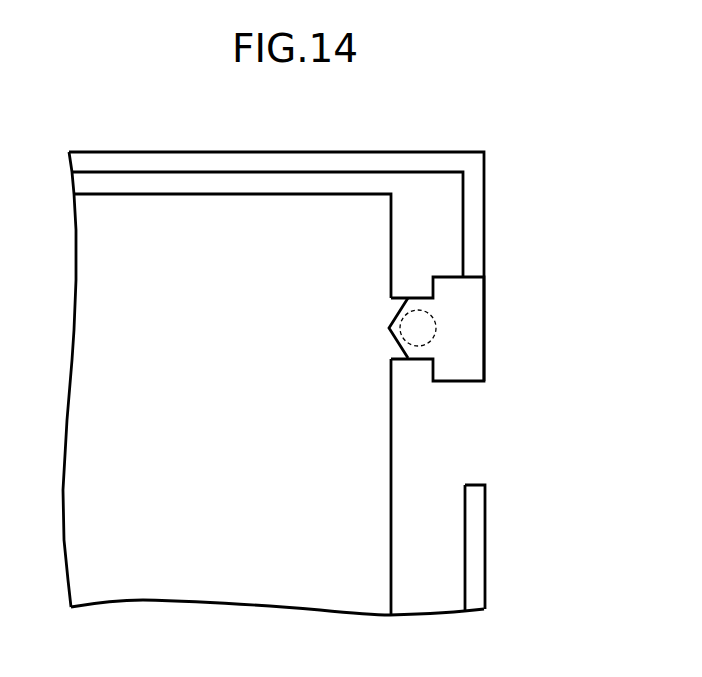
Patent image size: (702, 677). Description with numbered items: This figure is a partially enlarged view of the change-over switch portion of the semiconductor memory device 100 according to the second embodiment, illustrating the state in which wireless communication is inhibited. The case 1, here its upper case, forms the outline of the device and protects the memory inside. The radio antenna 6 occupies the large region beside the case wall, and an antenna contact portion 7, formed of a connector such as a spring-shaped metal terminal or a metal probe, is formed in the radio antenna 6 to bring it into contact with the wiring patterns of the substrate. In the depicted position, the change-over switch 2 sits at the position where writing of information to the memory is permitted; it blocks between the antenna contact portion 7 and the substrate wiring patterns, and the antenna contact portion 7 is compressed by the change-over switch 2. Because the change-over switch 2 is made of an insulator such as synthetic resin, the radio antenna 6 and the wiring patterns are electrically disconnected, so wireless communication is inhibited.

The semiconductor memory device 100 is at (434, 122).
The case 1 is at (484, 203).
The radio antenna 6 is at (92, 387).
The change-over switch 2 is at (472, 325).
The antenna contact portion 7 is at (430, 333).